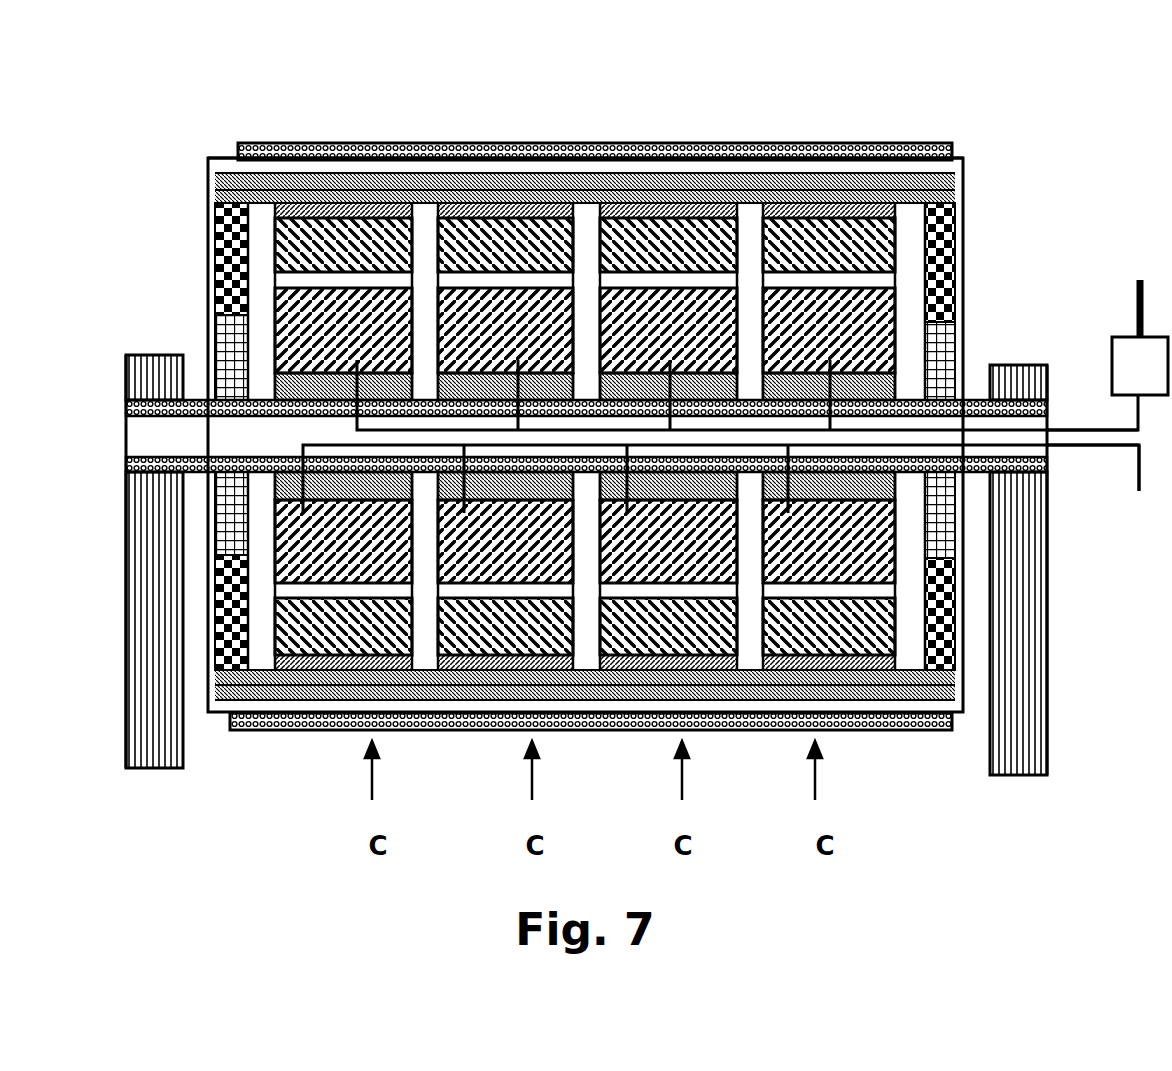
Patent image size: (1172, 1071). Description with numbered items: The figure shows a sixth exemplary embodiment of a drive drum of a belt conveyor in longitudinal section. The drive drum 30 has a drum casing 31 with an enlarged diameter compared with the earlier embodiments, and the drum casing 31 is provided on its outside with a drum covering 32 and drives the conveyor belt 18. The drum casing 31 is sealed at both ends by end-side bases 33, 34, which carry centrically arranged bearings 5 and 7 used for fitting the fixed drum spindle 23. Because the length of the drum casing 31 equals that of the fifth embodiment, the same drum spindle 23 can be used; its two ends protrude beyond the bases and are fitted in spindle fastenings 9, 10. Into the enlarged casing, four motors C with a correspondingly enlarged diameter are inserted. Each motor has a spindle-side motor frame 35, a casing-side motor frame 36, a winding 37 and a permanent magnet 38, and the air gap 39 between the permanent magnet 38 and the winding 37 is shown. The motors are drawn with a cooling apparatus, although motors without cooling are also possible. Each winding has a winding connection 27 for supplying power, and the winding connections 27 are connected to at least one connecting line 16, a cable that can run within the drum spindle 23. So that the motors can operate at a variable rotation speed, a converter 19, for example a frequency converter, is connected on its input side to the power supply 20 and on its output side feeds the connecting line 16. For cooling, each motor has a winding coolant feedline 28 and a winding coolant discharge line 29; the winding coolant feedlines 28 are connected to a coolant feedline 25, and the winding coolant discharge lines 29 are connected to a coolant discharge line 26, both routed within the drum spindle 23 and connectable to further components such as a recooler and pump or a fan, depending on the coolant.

The bearing 5 is at (223, 203).
The bearing 7 is at (921, 303).
The spindle fastening 9 is at (154, 355).
The spindle fastening 10 is at (1014, 365).
The connecting line 16 is at (1085, 433).
The conveyor belt 18 is at (709, 140).
The converter 19 is at (1125, 350).
The power supply 20 is at (1119, 221).
The drum spindle 23 is at (196, 430).
The coolant feedline 25 is at (1119, 653).
The coolant discharge line 26 is at (1099, 453).
The winding connection 27 is at (675, 372).
The winding coolant feedline 28 is at (721, 653).
The winding coolant discharge line 29 is at (788, 473).
The drive drum 30 is at (585, 454).
The drum casing 31 is at (562, 188).
The drum covering 32 is at (579, 454).
The end-side base 33 is at (222, 712).
The end-side base 34 is at (941, 357).
The spindle-side motor frame 35 is at (342, 490).
The casing-side motor frame 36 is at (332, 192).
The winding 37 is at (390, 312).
The permanent magnet 38 is at (300, 250).
The air gap 39 is at (356, 268).